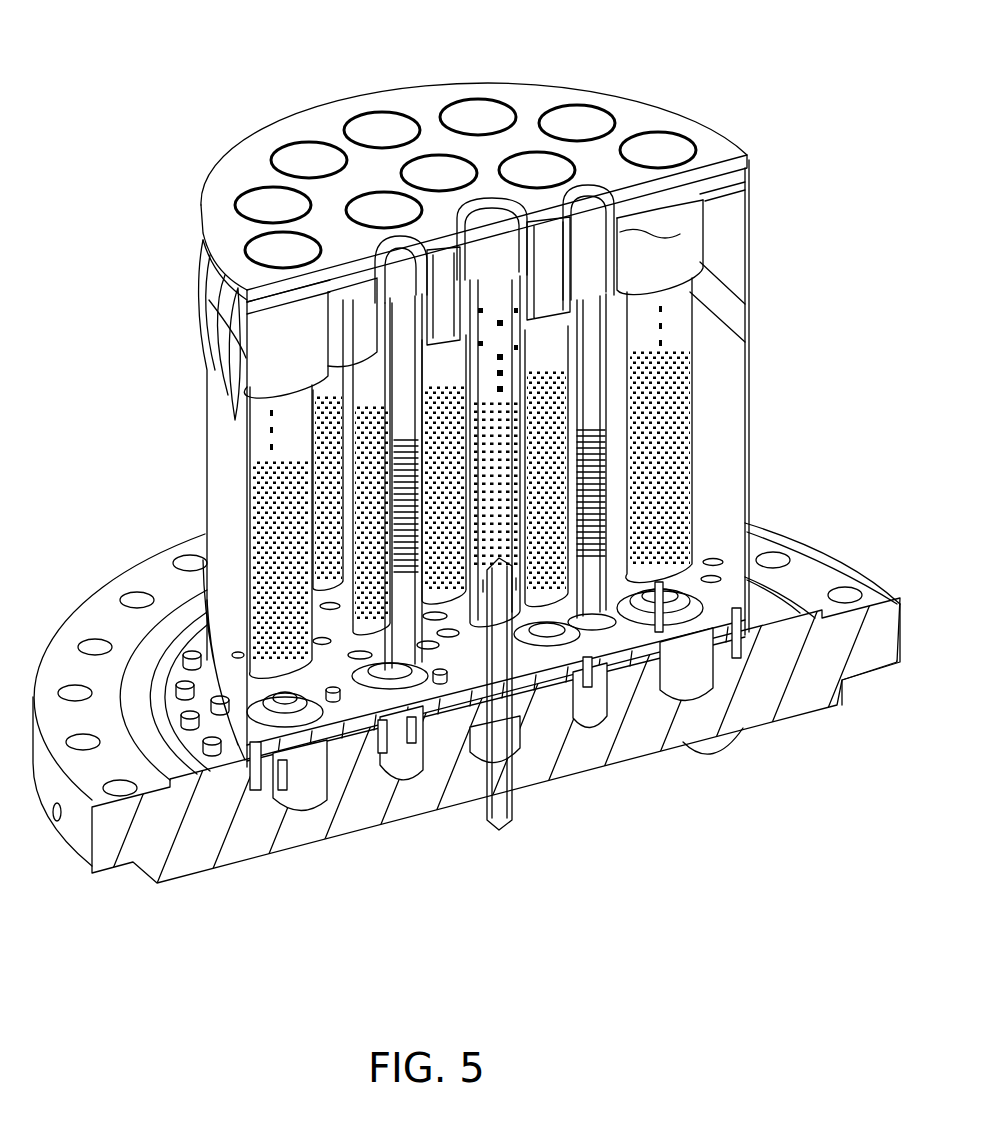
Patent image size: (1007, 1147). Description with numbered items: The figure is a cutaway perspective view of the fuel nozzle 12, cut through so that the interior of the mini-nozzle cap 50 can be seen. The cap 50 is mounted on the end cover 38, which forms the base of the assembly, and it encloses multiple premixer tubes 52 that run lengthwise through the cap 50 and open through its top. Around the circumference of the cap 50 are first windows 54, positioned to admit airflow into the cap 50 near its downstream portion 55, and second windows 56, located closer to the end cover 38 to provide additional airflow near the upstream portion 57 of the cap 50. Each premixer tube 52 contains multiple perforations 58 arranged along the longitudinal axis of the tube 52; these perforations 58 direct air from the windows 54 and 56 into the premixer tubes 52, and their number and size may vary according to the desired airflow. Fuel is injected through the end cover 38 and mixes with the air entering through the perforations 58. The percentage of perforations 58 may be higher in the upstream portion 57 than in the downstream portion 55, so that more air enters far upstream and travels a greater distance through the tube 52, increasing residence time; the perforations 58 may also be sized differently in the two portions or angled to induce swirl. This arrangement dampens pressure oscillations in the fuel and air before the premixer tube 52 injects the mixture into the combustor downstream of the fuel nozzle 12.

The fuel nozzle 12 is at (592, 62).
The mini-nozzle cap 50 is at (532, 97).
The premixer tubes 52 is at (600, 133).
The first windows 54 is at (207, 382).
The downstream portion 55 is at (720, 199).
The second windows 56 is at (223, 683).
The upstream portion 57 is at (715, 490).
The end cover 38 is at (762, 705).
The perforations 58 is at (517, 545).